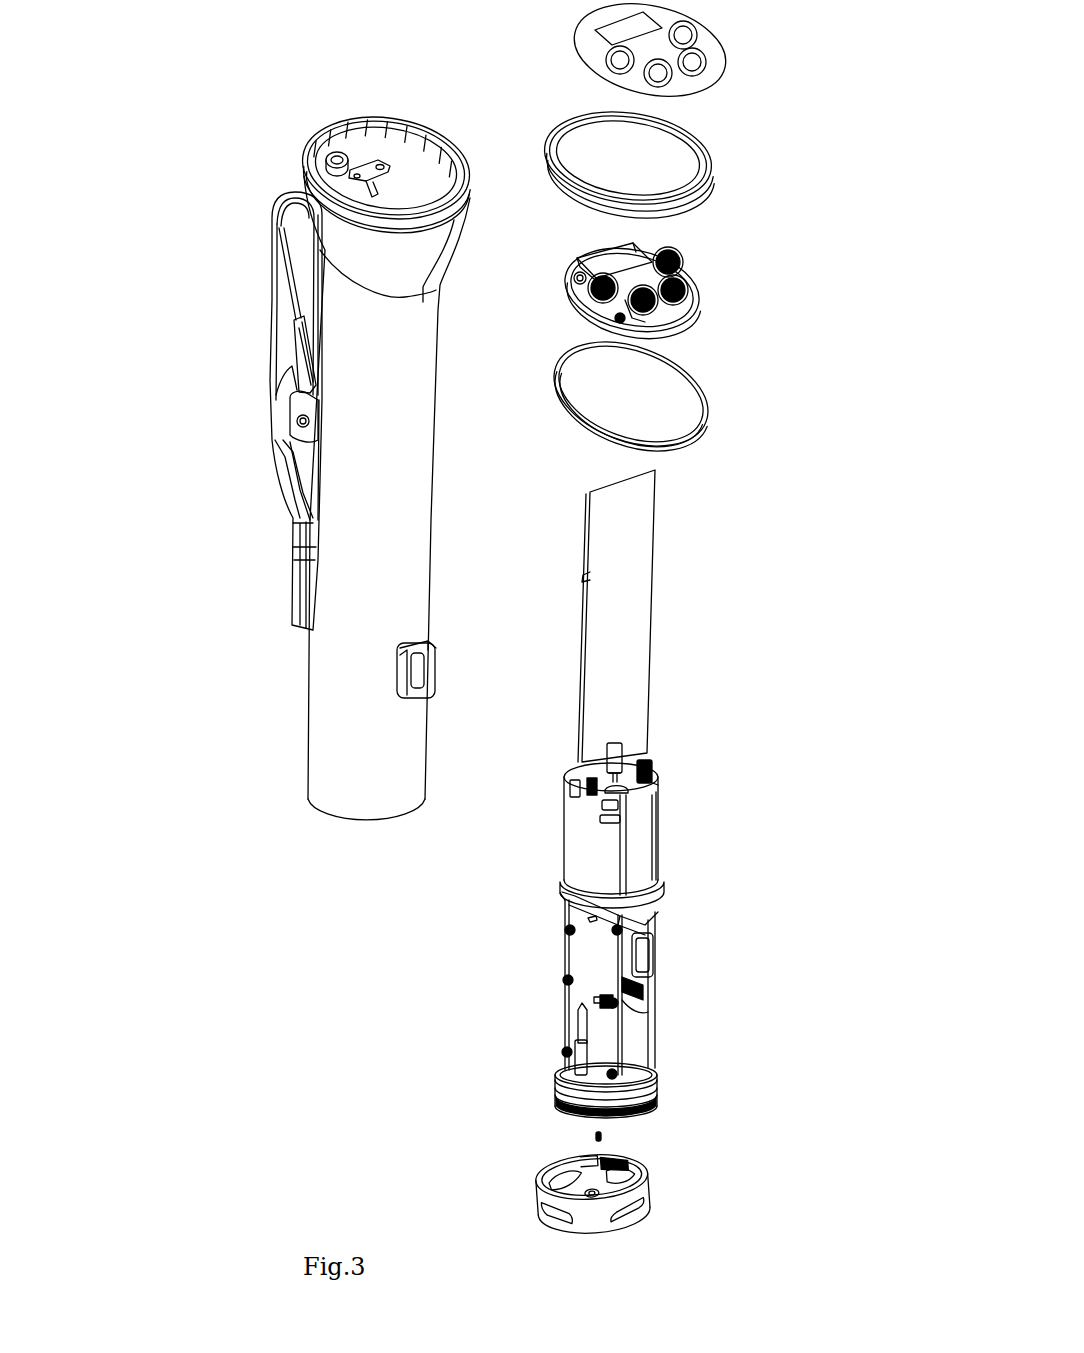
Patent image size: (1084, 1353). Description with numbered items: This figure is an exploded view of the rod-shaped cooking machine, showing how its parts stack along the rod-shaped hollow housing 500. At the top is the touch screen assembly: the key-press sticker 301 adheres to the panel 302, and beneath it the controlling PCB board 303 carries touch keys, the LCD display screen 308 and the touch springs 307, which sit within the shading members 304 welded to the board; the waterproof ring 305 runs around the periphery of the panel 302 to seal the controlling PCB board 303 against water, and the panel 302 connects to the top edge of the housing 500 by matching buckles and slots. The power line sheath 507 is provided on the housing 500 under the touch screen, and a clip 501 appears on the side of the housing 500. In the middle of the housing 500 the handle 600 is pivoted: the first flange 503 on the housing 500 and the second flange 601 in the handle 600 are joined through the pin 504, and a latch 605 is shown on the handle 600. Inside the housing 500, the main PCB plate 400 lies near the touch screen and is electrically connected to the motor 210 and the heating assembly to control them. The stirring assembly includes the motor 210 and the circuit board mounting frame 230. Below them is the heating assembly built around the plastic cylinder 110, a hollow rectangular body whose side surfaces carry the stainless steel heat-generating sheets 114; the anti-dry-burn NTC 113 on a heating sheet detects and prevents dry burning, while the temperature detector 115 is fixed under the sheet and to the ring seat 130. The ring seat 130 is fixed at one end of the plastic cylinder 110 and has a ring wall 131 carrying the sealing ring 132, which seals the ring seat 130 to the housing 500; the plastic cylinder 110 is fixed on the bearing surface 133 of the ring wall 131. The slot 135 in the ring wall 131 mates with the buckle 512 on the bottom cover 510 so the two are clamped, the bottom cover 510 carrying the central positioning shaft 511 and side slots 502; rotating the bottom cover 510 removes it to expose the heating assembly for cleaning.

The key-press sticker 301 is at (710, 48).
The panel 302 is at (675, 157).
The controlling PCB board 303 is at (677, 259).
The shading members 304 is at (697, 343).
The waterproof ring 305 is at (712, 405).
The touch springs 307 is at (687, 258).
The LCD display screen 308 is at (623, 257).
The main PCB plate 400 is at (632, 657).
The housing 500 is at (387, 463).
The clip 501 is at (440, 668).
The slot 502 is at (648, 1210).
The first flange 503 is at (308, 436).
The pin 504 is at (298, 424).
The power line sheath 507 is at (303, 167).
The bottom cover 510 is at (608, 1219).
The positioning shaft 511 is at (585, 1135).
The buckle 512 is at (622, 1157).
The handle 600 is at (248, 411).
The second flange 601 is at (293, 383).
The latch 605 is at (296, 323).
The motor 210 is at (670, 825).
The circuit board mounting frame 230 is at (658, 768).
The plastic cylinder 110 is at (608, 978).
The anti-dry-burn NTC 113 is at (573, 908).
The stainless steel heat-generating sheets 114 is at (576, 958).
The temperature detector 115 is at (578, 1007).
The ring seat 130 is at (607, 1086).
The ring wall 131 is at (660, 1080).
The sealing ring 132 is at (655, 1088).
The bearing surface 133 is at (570, 1057).
The slot 135 is at (565, 1105).